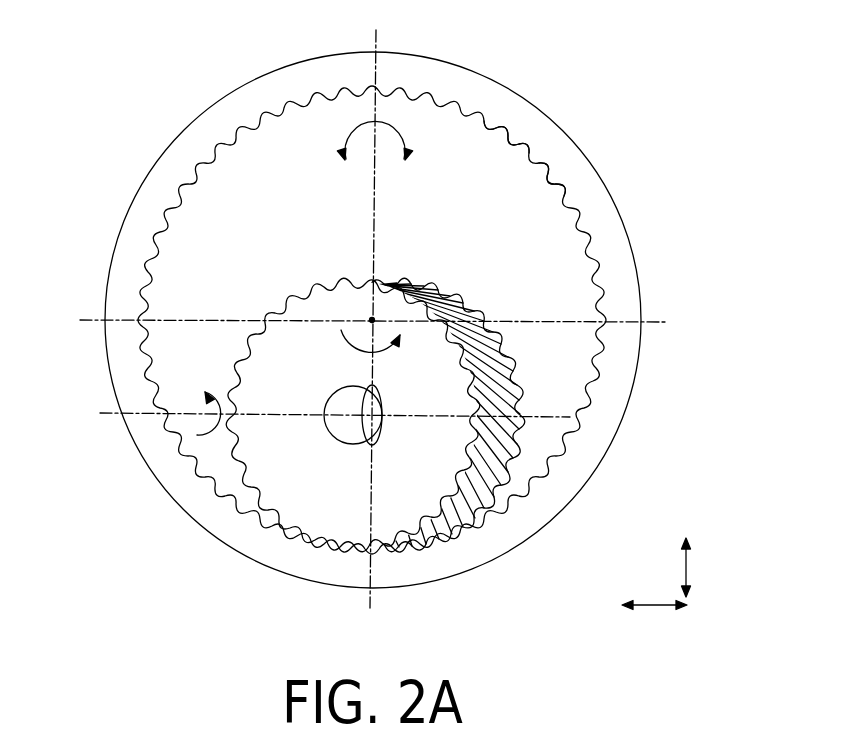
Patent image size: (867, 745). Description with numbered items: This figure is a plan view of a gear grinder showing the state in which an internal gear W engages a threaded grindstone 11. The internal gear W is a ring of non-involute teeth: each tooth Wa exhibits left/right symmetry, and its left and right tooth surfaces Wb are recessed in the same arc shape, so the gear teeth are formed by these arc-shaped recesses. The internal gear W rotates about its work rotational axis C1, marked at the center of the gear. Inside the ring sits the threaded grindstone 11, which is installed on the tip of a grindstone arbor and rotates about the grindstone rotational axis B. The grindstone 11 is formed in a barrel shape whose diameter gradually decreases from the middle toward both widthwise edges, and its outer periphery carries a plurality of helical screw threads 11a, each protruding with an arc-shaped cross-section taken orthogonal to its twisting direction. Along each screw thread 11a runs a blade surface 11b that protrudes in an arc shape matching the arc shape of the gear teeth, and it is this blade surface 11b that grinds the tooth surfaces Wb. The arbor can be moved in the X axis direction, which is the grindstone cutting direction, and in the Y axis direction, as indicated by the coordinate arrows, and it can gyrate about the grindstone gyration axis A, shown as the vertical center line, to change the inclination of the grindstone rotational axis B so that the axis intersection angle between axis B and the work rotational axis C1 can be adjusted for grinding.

The internal gear W is at (537, 100).
The tooth Wa is at (525, 146).
The tooth surface Wb is at (568, 192).
The work rotational axis C1 is at (370, 319).
The threaded grindstone 11 is at (530, 442).
The screw thread 11a is at (507, 354).
The blade surface 11b is at (509, 382).
The grindstone gyration axis A is at (375, 305).
The grindstone rotational axis B is at (322, 415).
The X axis direction X is at (699, 567).
The Y axis direction Y is at (654, 621).